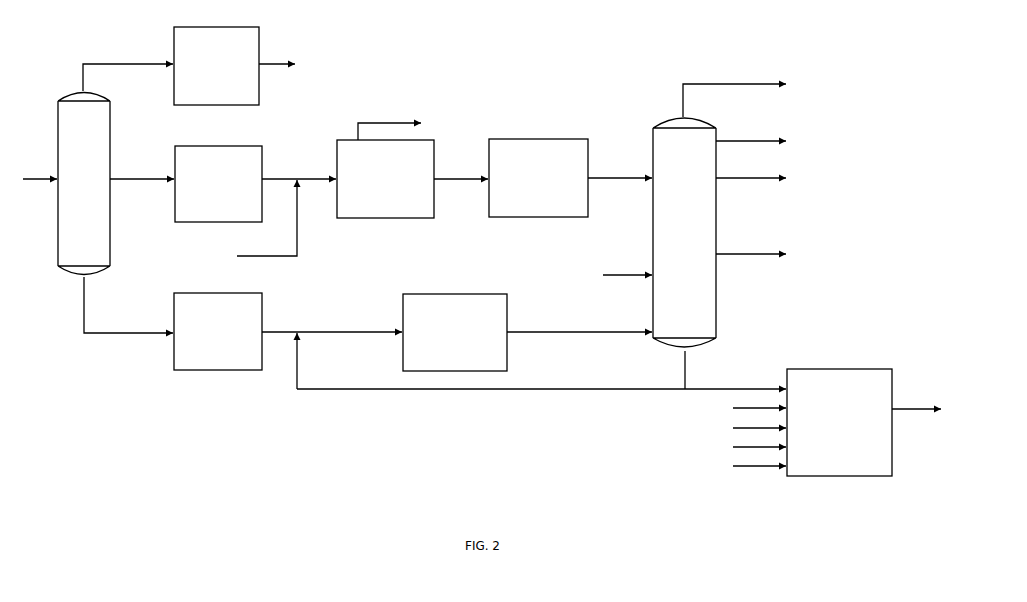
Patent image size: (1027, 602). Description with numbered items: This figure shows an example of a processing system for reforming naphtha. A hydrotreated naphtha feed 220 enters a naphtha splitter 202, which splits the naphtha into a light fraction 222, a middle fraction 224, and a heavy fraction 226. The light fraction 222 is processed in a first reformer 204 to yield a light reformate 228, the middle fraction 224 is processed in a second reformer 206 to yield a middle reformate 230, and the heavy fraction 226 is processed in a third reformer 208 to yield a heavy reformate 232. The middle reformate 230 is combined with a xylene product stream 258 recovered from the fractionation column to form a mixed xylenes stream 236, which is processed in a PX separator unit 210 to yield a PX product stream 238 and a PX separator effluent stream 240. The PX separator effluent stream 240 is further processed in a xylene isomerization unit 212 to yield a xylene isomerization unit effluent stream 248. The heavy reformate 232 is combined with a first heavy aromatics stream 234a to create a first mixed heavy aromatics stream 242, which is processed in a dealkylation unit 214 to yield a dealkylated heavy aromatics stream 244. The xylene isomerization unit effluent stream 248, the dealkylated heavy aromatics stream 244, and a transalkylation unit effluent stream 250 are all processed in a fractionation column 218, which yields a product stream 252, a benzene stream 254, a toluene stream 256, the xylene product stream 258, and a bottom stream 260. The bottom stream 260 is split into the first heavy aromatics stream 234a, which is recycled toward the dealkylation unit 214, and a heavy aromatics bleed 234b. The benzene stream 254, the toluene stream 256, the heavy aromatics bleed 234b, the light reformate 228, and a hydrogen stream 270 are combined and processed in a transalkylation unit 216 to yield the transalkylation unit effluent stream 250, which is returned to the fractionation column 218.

The naphtha splitter 202 is at (84, 184).
The first reformer 204 is at (216, 66).
The second reformer 206 is at (218, 184).
The third reformer 208 is at (218, 331).
The PX separator unit 210 is at (385, 179).
The xylene isomerization unit 212 is at (538, 178).
The dealkylation unit 214 is at (455, 332).
The transalkylation unit 216 is at (839, 422).
The fractionation column 218 is at (684, 232).
The hydrotreated naphtha feed 220 is at (40, 172).
The light fraction 222 is at (128, 71).
The middle fraction 224 is at (142, 171).
The heavy fraction 226 is at (128, 305).
The light reformate 228 is at (522, 228).
The middle reformate 230 is at (279, 169).
The heavy reformate 232 is at (279, 325).
The first heavy aromatics stream 234a is at (491, 361).
The heavy aromatics bleed 234b is at (735, 383).
The mixed xylenes stream 236 is at (316, 169).
The PX product stream 238 is at (389, 124).
The PX separator effluent stream 240 is at (461, 171).
The first mixed heavy aromatics stream 242 is at (349, 325).
The dealkylated heavy aromatics stream 244 is at (579, 322).
The xylene isomerization unit effluent stream 248 is at (620, 168).
The transalkylation unit effluent stream 250 is at (772, 332).
The product stream 252 is at (734, 94).
The benzene stream 254 is at (751, 277).
The toluene stream 256 is at (751, 306).
The xylene product stream 258 is at (511, 218).
The bottom stream 260 is at (699, 370).
The hydrogen stream 270 is at (759, 460).